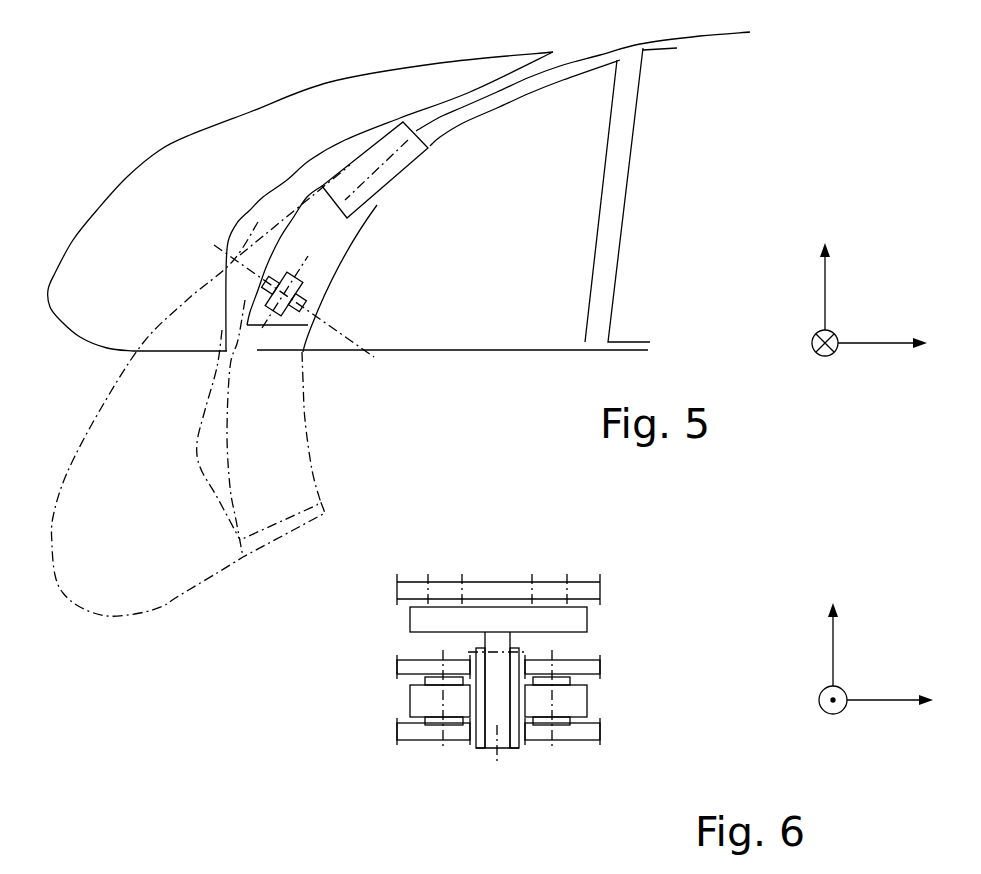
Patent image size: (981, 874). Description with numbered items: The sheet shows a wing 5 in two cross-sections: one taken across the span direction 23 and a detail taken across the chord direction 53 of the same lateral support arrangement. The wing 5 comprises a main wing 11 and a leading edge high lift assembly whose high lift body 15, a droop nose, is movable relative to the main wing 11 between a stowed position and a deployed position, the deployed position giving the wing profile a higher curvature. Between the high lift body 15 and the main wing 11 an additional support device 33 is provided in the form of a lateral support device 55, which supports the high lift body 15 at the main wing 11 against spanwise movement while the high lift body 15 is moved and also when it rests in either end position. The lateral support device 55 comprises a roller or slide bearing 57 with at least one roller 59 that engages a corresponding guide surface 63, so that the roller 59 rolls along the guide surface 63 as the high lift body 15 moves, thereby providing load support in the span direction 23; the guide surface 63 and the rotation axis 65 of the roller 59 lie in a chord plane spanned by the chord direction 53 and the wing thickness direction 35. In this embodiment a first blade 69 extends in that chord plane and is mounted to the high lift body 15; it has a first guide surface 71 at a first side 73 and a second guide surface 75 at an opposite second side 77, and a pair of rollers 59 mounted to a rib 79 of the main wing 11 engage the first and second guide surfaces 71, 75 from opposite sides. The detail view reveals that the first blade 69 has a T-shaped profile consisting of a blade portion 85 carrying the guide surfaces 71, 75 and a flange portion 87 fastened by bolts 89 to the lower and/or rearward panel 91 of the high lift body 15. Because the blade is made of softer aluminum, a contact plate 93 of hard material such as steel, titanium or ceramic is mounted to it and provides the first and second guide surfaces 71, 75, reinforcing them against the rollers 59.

In FIG. 5, the wing 5 is at (100, 106).
In FIG. 5, the main wing 11 is at (692, 226).
In FIG. 5, the high lift body 15 is at (148, 236).
In FIG. 6, the high lift body 15 is at (485, 588).
In FIG. 5, the span direction 23 is at (818, 358).
In FIG. 6, the span direction 23 is at (888, 700).
In FIG. 5, the additional support device 33 is at (352, 258).
In FIG. 6, the additional support device 33 is at (680, 669).
In FIG. 5, the wing thickness direction 35 is at (825, 283).
In FIG. 6, the wing thickness direction 35 is at (833, 643).
In FIG. 5, the chord direction 53 is at (880, 343).
In FIG. 6, the chord direction 53 is at (826, 714).
In FIG. 5, the lateral support device 55 is at (352, 258).
In FIG. 5, the roller or slide bearing 57 is at (302, 295).
In FIG. 6, the roller or slide bearing 57 is at (408, 754).
In FIG. 5, the roller 59 is at (307, 278).
In FIG. 6, the roller 59 is at (422, 707).
In FIG. 5, the guide surface 63 is at (302, 265).
In FIG. 5, the rotation axis 65 is at (343, 333).
In FIG. 6, the rotation axis 65 is at (443, 692).
In FIG. 5, the first blade 69 is at (357, 178).
In FIG. 6, the first blade 69 is at (497, 745).
In FIG. 5, the first guide surface 71 is at (352, 228).
In FIG. 6, the first guide surface 71 is at (467, 668).
In FIG. 5, the first side 73 is at (352, 228).
In FIG. 6, the first side 73 is at (484, 633).
In FIG. 6, the second guide surface 75 is at (600, 668).
In FIG. 6, the second side 77 is at (511, 637).
In FIG. 5, the rib 79 is at (600, 123).
In FIG. 6, the blade portion 85 is at (497, 715).
In FIG. 6, the flange portion 87 is at (577, 617).
In FIG. 6, the bolts 89 is at (567, 580).
In FIG. 5, the lower and/or rearward panel 91 is at (261, 200).
In FIG. 5, the contact plate 93 is at (283, 311).
In FIG. 6, the contact plate 93 is at (479, 749).